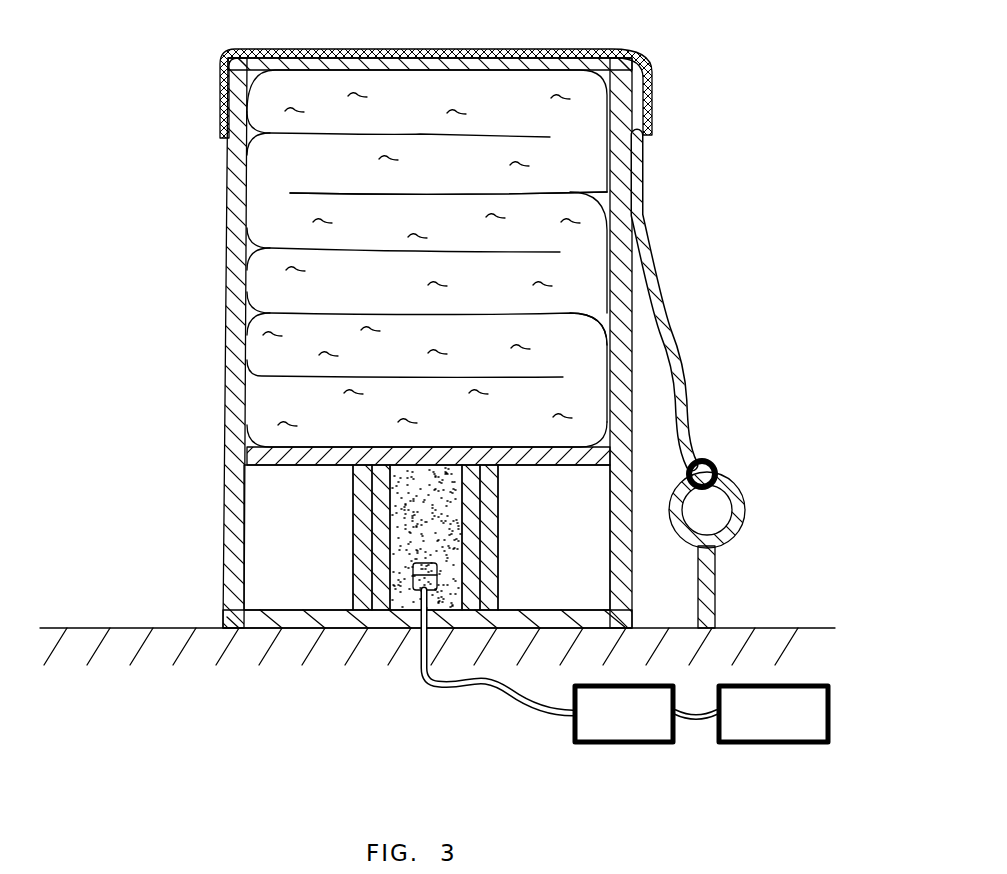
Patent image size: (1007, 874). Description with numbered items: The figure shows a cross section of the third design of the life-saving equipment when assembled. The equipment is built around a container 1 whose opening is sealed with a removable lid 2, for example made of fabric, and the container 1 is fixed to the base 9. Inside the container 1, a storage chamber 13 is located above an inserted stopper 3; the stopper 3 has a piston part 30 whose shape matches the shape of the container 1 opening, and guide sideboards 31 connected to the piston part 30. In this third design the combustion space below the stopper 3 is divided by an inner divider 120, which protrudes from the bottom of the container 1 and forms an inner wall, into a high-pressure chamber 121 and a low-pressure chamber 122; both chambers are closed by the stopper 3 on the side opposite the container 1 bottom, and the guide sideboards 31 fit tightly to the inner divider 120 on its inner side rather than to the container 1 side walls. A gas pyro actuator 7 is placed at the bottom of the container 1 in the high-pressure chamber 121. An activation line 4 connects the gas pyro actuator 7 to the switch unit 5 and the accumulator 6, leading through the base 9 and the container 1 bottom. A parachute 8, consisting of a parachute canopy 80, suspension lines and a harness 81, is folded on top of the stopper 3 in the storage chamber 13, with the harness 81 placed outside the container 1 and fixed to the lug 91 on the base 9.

The container 1 is at (238, 250).
The removable lid 2 is at (222, 98).
The stopper 3 is at (250, 454).
The activation line 4 is at (443, 694).
The switch unit 5 is at (660, 733).
The accumulator 6 is at (820, 733).
The gas pyro actuator 7 is at (427, 600).
The parachute 8 is at (582, 176).
The base 9 is at (150, 652).
The storage chamber 13 is at (598, 318).
The piston part 30 is at (311, 540).
The guide sideboards 31 is at (383, 583).
The parachute canopy 80 is at (283, 173).
The harness 81 is at (685, 405).
The lug 91 is at (742, 490).
The inner divider 120 is at (362, 506).
The high-pressure chamber 121 is at (397, 540).
The low-pressure chamber 122 is at (290, 590).